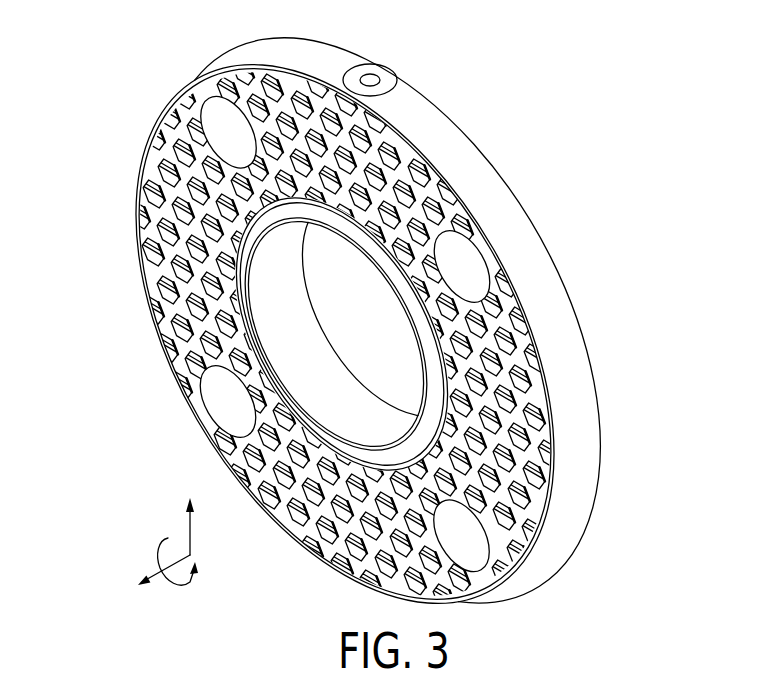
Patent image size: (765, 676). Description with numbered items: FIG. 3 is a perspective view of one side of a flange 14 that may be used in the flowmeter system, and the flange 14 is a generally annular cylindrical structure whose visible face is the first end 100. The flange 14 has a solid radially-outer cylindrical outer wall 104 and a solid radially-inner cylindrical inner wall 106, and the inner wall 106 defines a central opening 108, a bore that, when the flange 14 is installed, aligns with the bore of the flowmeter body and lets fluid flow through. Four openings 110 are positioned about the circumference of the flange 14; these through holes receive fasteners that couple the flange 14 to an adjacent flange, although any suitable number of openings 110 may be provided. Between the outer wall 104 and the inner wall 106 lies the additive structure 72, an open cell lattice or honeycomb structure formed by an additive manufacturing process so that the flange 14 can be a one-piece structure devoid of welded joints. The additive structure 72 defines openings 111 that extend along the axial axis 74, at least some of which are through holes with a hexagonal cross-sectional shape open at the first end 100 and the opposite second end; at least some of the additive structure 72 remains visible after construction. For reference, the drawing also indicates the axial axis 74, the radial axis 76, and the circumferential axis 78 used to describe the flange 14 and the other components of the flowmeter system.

The flange 14 is at (366, 337).
The first end 100 is at (228, 88).
The outer wall 104 is at (445, 132).
The additive structure 72 is at (197, 178).
The openings 111 is at (183, 213).
The openings 110 is at (473, 263).
The inner wall 106 is at (308, 348).
The opening 108 is at (395, 373).
The radial axis 76 is at (190, 530).
The axial axis 74 is at (160, 568).
The circumferential axis 78 is at (162, 552).